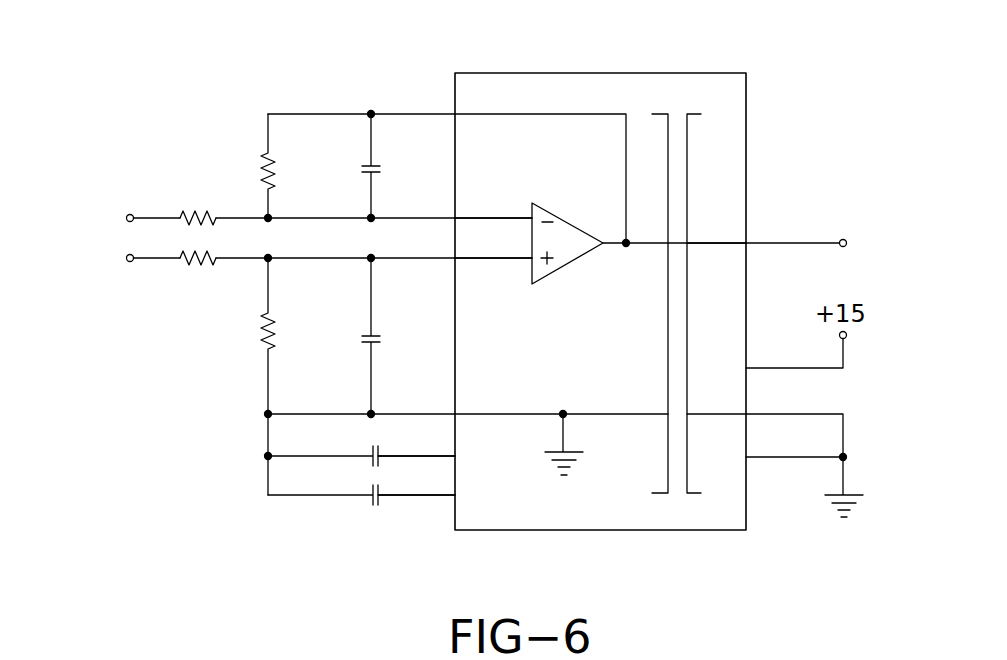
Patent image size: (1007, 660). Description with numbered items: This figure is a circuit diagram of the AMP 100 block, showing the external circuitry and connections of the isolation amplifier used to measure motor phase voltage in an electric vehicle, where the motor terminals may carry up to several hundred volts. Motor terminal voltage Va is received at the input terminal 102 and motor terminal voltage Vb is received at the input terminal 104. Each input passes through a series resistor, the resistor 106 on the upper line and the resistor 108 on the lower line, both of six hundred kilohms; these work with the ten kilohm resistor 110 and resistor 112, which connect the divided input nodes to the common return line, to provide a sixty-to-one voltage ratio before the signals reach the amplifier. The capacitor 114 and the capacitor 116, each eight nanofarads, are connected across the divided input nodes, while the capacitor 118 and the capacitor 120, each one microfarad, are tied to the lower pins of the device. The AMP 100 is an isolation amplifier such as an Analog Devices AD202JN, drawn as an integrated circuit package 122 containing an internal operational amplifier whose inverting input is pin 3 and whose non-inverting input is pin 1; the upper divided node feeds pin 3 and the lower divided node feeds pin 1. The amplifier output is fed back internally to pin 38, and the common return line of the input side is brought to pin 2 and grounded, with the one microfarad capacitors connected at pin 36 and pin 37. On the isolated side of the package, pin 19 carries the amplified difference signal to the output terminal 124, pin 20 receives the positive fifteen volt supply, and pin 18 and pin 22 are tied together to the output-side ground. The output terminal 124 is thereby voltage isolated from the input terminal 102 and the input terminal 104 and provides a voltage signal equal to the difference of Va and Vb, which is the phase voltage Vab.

The AMP 100 is at (790, 78).
The input terminal 102 is at (126, 217).
The input terminal 104 is at (126, 259).
The resistor 106 is at (185, 214).
The resistor 108 is at (185, 263).
The resistor 110 is at (272, 152).
The resistor 112 is at (272, 313).
The capacitor 114 is at (375, 166).
The capacitor 116 is at (378, 336).
The capacitor 118 is at (373, 446).
The capacitor 120 is at (373, 506).
The isolation amplifier integrated circuit 122 is at (593, 73).
The output terminal 124 is at (848, 238).
The pin 38 of amplifier 122 38 is at (447, 165).
The pin 3 (inverting input) of amplifier 122 3 is at (493, 207).
The pin 1 (non-inverting input) of amplifier 122 1 is at (493, 249).
The pin 2 (ground) of amplifier 122 2 is at (467, 430).
The pin 36 of amplifier 122 36 is at (437, 455).
The pin 37 of amplifier 122 37 is at (437, 495).
The pin 19 (output) of amplifier 122 19 is at (716, 227).
The pin 20 (+15 V supply) of amplifier 122 20 is at (776, 350).
The pin 18 of amplifier 122 18 is at (765, 421).
The pin 22 (ground) of amplifier 122 22 is at (784, 474).